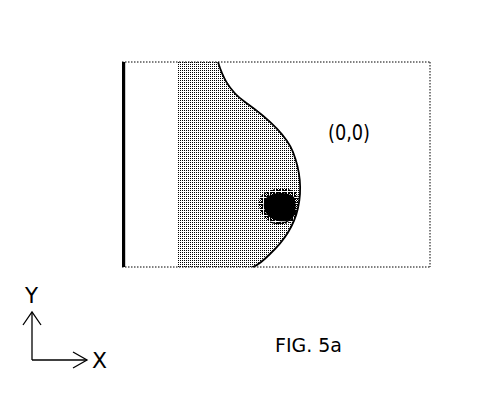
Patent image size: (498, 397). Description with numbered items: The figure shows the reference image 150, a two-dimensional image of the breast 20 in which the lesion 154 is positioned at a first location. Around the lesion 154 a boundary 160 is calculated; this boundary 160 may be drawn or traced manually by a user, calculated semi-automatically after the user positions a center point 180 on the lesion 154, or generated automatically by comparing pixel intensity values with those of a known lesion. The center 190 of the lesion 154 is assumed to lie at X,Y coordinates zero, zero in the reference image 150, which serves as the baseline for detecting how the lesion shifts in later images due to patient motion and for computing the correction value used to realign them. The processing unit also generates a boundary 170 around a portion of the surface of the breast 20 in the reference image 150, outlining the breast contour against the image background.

The reference image 150 is at (210, 62).
The boundary 170 is at (225, 85).
The breast 20 is at (263, 118).
The boundary 160 is at (262, 195).
The lesion 154 is at (295, 208).
The center point 180 is at (278, 223).
The center 190 is at (288, 225).